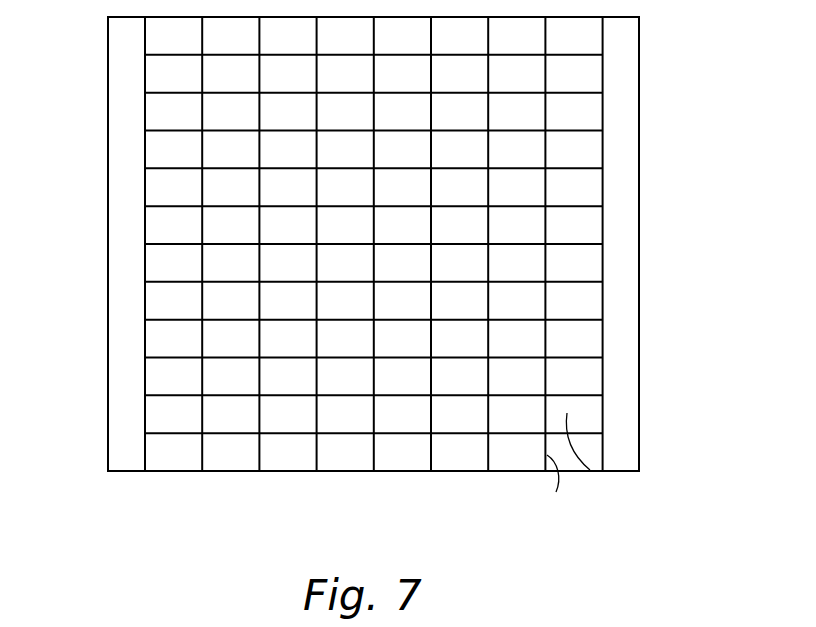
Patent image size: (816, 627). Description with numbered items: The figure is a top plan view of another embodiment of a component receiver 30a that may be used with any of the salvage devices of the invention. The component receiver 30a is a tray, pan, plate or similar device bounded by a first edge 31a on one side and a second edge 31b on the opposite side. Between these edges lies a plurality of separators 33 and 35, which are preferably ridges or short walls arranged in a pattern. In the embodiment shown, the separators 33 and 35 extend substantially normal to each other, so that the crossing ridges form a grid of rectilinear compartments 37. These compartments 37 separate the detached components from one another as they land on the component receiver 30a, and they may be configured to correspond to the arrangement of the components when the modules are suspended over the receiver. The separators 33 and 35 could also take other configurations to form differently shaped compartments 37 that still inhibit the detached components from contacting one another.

The component receiver 30a is at (697, 112).
The first edge 31a is at (122, 370).
The second edge 31b is at (630, 230).
The separators 33 is at (492, 450).
The separators 35 is at (593, 432).
The compartments 37 is at (595, 462).